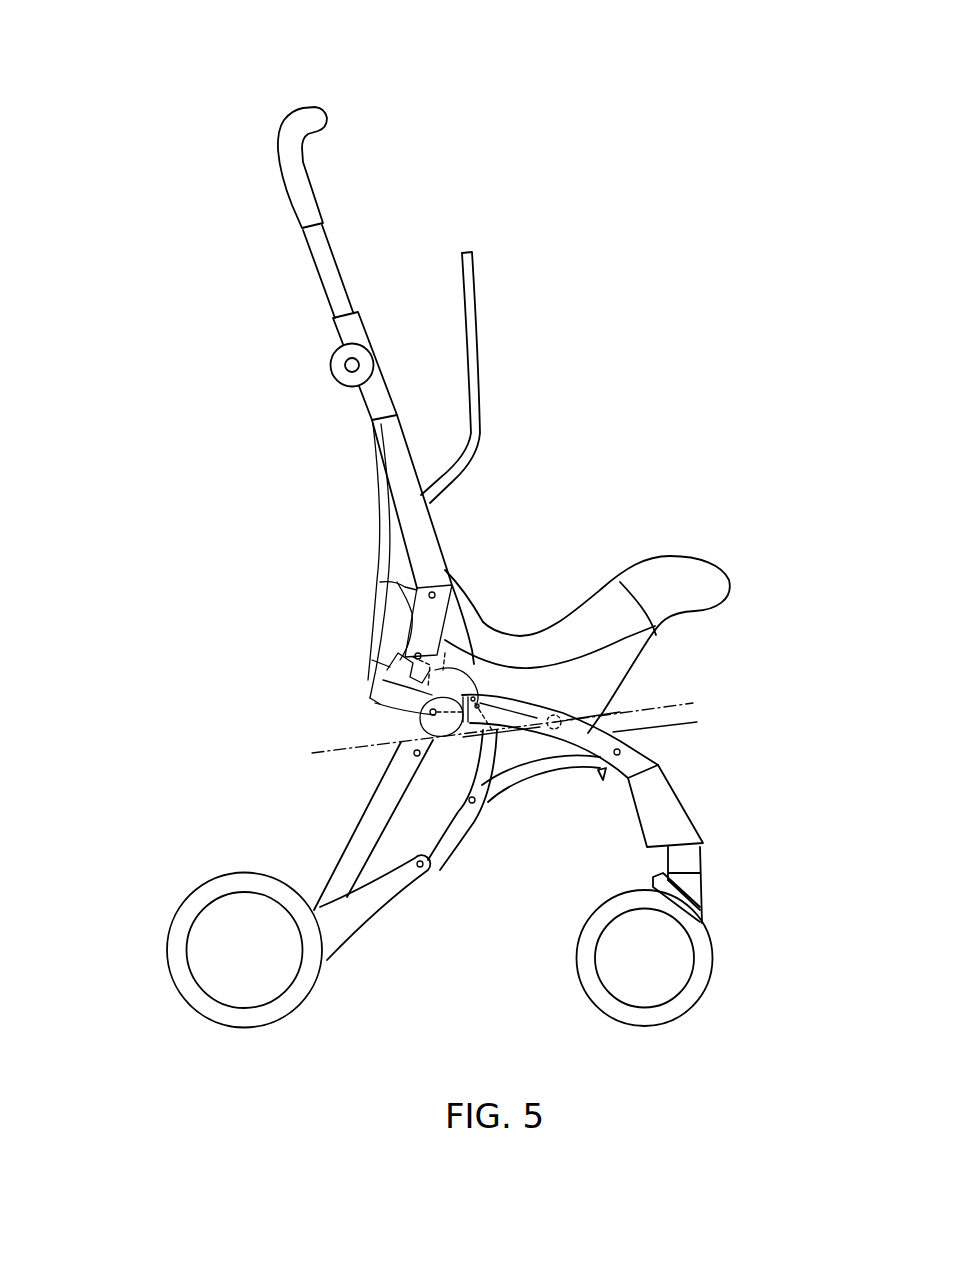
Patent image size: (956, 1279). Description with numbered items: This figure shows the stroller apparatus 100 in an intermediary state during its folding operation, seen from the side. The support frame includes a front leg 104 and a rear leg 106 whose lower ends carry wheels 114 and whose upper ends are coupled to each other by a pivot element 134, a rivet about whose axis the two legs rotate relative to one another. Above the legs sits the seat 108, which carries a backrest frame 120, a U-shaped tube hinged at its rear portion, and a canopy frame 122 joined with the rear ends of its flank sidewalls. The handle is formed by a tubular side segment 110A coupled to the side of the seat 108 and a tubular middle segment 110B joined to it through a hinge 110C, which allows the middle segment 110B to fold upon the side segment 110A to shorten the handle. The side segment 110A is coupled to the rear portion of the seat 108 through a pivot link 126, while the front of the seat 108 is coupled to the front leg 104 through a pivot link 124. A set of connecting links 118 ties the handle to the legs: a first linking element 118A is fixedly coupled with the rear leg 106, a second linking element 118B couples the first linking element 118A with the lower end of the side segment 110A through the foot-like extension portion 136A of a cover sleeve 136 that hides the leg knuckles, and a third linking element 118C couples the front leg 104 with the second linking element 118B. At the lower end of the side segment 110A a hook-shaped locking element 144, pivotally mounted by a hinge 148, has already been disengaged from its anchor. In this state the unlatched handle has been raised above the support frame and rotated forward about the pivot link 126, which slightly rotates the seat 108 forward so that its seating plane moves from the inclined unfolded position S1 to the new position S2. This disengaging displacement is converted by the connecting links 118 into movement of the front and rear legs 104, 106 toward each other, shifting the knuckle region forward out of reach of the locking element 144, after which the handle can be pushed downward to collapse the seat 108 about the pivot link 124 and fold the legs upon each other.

The stroller apparatus 100 is at (160, 63).
The front leg 104 is at (650, 760).
The rear leg 106 is at (372, 837).
The seat 108 is at (530, 638).
The side segment 110A is at (407, 483).
The middle segment 110B is at (290, 122).
The hinge 110C is at (332, 370).
The wheel 114 is at (207, 1013).
The connecting links 118 is at (553, 982).
The first linking element 118A is at (403, 903).
The second linking element 118B is at (457, 822).
The third linking element 118C is at (545, 778).
The backrest frame 120 is at (383, 522).
The canopy frame 122 is at (465, 250).
The pivot link 124 is at (587, 720).
The pivot link 126 is at (395, 592).
The pivot element 134 is at (413, 730).
The cover sleeve 136 is at (372, 660).
The foot-like extension portion 136A is at (480, 645).
The locking element 144 is at (370, 707).
The hinge 148 is at (403, 647).
The seating plane S1 is at (337, 753).
The new position of the seating plane S2 is at (653, 743).